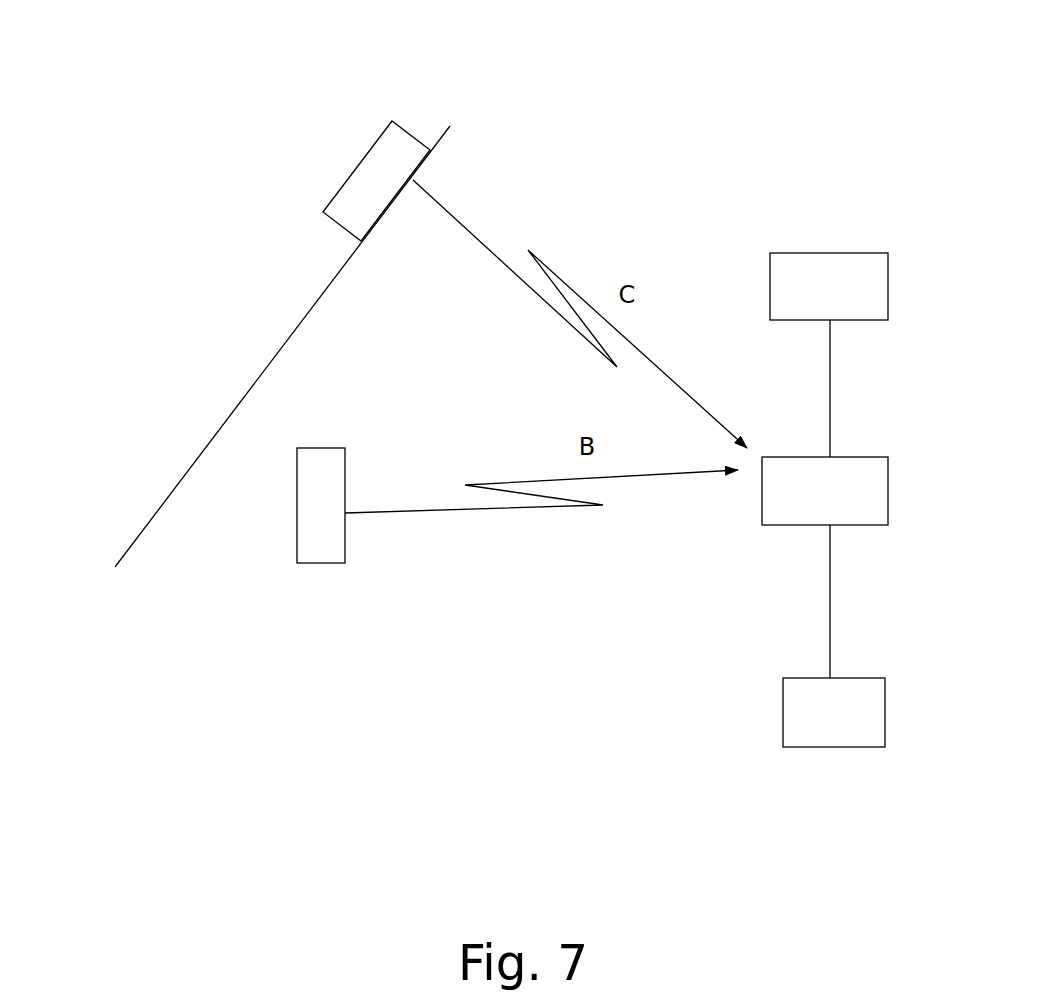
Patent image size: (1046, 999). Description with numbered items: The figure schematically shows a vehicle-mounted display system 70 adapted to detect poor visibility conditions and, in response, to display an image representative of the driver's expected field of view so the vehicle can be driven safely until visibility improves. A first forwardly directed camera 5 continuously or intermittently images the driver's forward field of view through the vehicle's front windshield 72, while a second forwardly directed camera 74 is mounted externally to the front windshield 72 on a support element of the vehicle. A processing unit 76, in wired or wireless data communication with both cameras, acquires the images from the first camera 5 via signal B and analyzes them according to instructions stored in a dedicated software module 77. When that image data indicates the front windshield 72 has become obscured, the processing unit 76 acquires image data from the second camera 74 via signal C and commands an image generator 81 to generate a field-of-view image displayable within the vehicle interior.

The display system 70 is at (674, 120).
The front windshield 72 is at (147, 525).
The second forwardly directed camera 74 is at (391, 121).
The first forwardly directed camera 5 is at (318, 500).
The software module 77 is at (813, 260).
The processing unit 76 is at (873, 467).
The image generator 81 is at (875, 700).